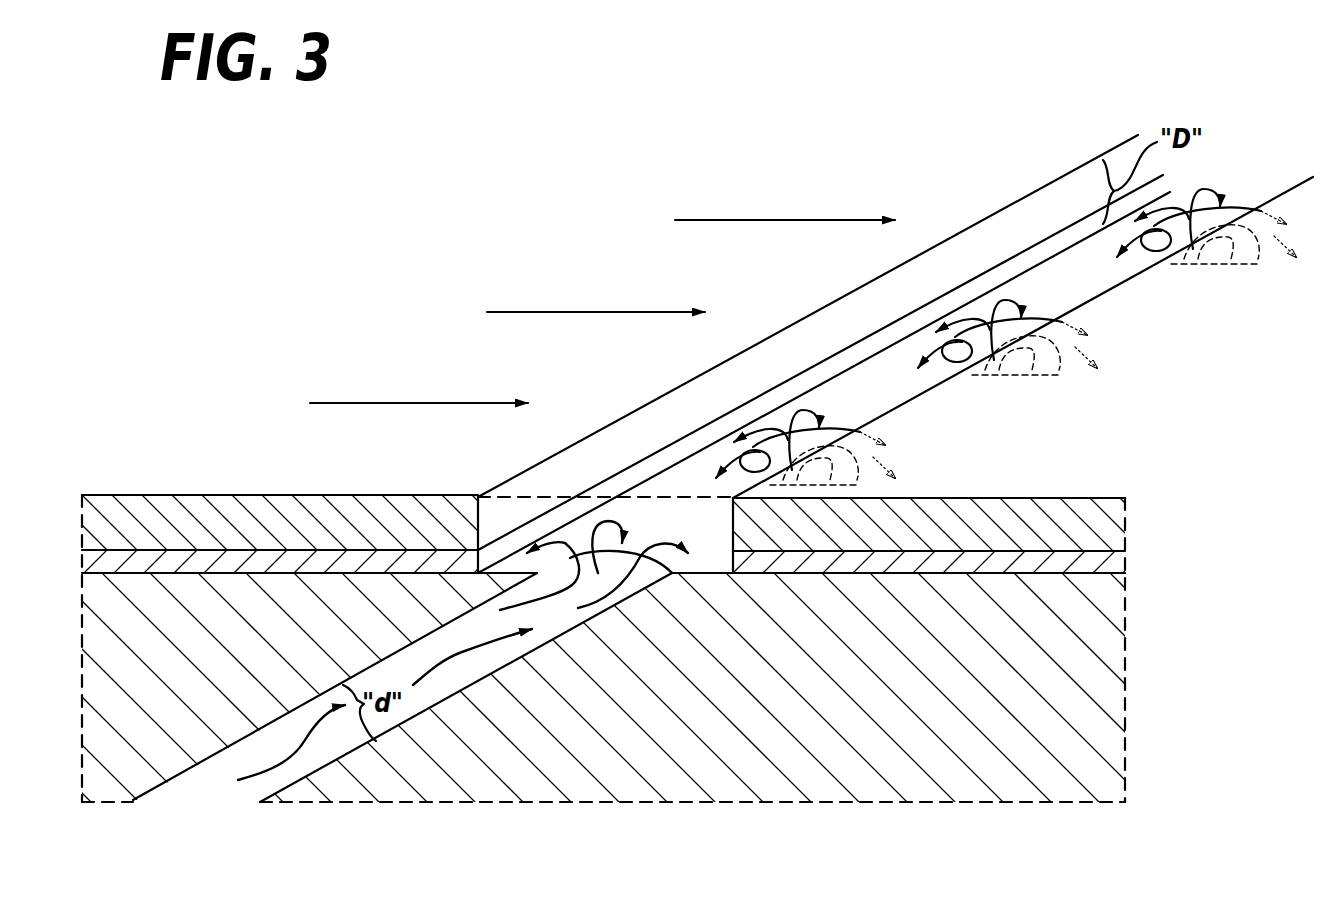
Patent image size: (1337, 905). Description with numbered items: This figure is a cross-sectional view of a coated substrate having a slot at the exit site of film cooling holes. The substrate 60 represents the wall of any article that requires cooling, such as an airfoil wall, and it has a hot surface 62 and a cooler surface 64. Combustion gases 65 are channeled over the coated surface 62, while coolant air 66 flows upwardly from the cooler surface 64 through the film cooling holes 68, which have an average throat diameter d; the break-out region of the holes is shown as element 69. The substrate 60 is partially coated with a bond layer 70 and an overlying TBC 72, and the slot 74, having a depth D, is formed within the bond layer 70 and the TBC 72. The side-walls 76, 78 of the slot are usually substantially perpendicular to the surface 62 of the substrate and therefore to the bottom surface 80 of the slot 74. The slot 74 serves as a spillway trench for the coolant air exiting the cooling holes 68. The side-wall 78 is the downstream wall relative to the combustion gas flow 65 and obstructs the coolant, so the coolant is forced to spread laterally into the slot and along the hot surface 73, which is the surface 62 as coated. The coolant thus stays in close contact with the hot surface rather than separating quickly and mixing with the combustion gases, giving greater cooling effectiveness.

The substrate 60 is at (1096, 676).
The hot surface 62 is at (1098, 567).
The cooler surface 64 is at (1053, 804).
The combustion gases 65 is at (618, 312).
The coolant air 66 is at (262, 772).
The film cooling holes 68 is at (757, 473).
The break-out region 69 is at (1138, 250).
The bond layer 70 is at (928, 562).
The TBC 72 is at (1081, 515).
The hot surface 73 is at (1036, 494).
The slot 74 is at (826, 299).
The side-wall 76 is at (603, 447).
The side-wall 78 is at (920, 381).
The bottom surface 80 is at (1063, 282).